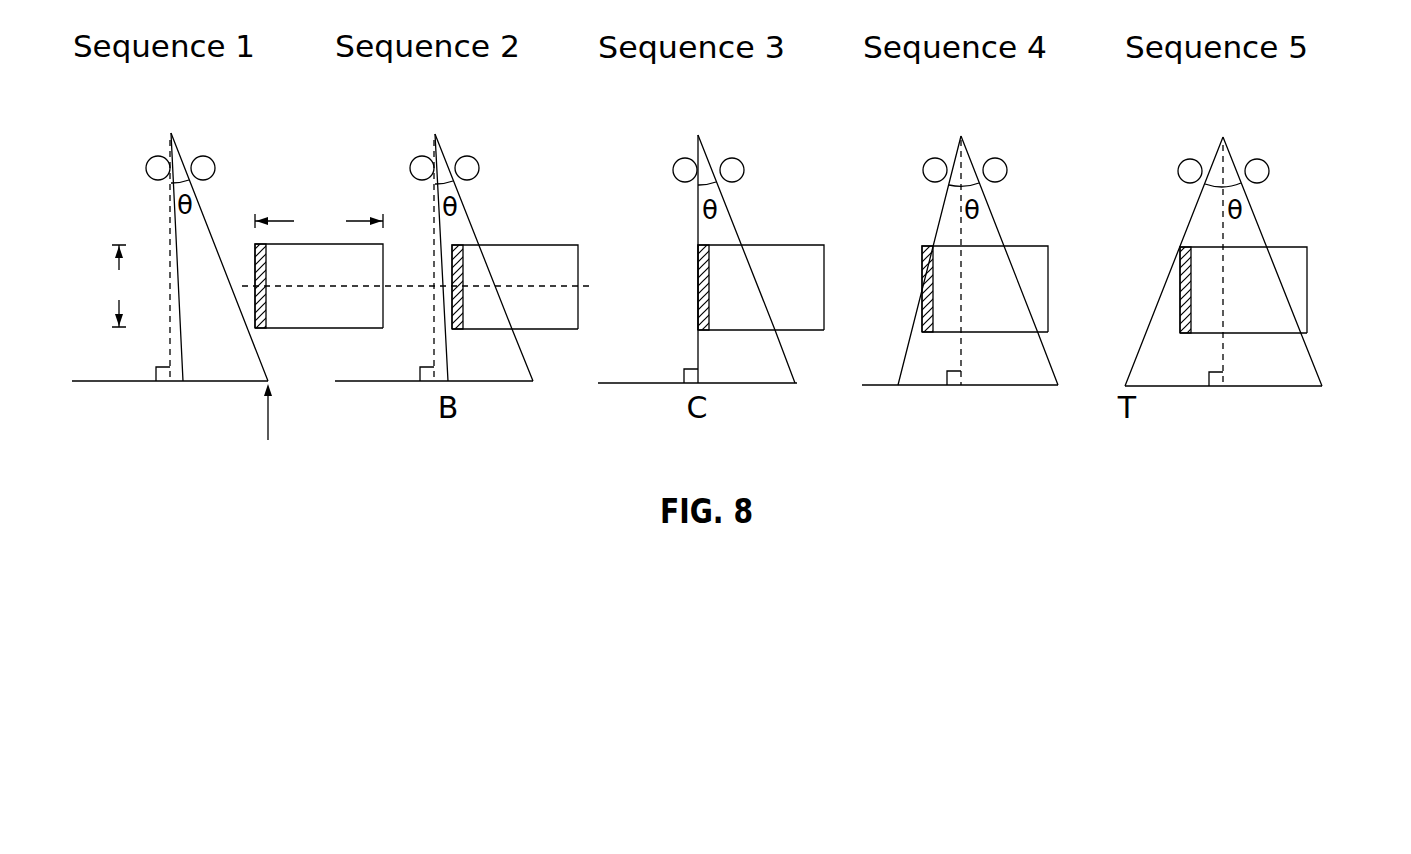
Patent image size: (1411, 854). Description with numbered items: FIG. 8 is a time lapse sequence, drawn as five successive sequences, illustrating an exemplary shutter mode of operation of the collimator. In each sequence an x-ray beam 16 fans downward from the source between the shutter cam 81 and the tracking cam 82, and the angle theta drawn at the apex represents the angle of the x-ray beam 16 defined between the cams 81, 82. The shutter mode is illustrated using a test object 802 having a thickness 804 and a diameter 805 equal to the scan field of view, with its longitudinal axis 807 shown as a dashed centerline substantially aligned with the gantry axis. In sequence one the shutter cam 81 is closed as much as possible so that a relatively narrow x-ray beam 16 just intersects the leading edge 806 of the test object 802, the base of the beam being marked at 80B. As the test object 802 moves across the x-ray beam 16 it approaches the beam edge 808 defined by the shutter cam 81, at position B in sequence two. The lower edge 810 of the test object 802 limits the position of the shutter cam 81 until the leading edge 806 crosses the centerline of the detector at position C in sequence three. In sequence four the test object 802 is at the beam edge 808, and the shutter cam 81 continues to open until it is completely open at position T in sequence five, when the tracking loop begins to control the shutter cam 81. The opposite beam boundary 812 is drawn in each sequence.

The x-ray beam 16 is at (216, 183).
The shutter cam 81 is at (150, 160).
The tracking cam 82 is at (211, 159).
The test object 802 is at (328, 274).
The thickness 804 is at (319, 221).
The diameter 805 is at (117, 286).
The leading edge 806 is at (256, 255).
The longitudinal axis 807 is at (333, 288).
The beam edge 808 is at (178, 378).
The lower edge 810 is at (543, 331).
The right edge of beam 812 is at (265, 372).
The beam base point 80B is at (268, 428).